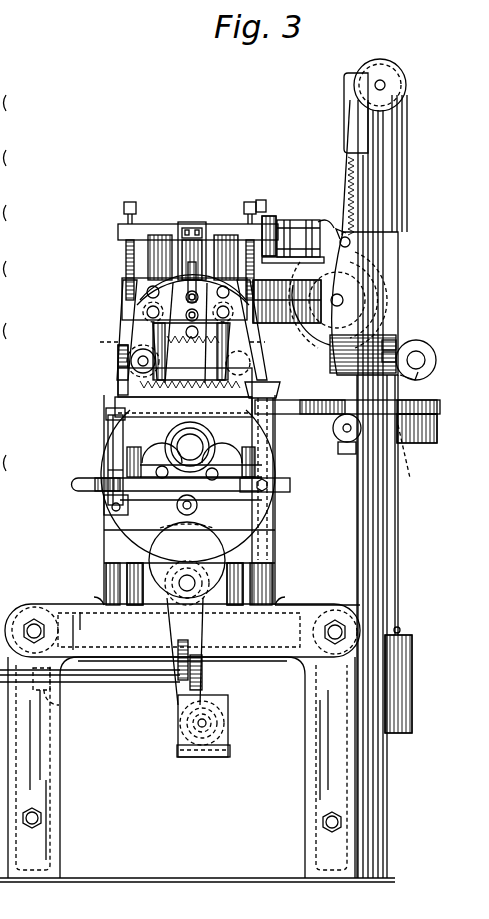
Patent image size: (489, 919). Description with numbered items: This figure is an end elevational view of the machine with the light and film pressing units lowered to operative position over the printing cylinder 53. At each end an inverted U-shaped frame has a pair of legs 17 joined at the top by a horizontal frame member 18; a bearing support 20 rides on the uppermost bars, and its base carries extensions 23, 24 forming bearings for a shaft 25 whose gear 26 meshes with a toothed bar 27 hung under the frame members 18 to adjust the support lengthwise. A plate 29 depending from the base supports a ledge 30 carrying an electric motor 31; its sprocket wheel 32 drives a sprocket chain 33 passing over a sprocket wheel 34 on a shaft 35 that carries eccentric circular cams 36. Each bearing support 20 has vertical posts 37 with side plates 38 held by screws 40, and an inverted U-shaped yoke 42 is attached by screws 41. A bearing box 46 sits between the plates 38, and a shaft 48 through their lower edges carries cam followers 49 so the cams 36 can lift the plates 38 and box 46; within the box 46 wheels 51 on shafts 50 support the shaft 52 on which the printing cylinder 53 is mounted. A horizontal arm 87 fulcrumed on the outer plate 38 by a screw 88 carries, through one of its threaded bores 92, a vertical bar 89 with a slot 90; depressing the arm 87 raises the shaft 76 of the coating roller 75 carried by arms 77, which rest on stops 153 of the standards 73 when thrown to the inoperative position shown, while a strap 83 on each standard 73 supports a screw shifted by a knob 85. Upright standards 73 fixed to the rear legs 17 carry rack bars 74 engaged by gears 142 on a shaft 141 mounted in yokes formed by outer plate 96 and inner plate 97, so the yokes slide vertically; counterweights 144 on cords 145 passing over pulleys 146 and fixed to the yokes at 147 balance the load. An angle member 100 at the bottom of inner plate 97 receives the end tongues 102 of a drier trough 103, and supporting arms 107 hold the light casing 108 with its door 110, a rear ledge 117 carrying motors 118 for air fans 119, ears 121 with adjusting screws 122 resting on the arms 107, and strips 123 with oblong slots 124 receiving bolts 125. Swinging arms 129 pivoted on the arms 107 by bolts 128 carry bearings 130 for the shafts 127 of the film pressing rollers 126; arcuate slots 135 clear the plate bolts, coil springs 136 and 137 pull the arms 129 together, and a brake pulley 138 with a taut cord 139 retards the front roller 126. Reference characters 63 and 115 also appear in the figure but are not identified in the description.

The legs 17 is at (60, 786).
The horizontal frame member 18 is at (268, 636).
The bearing supports 20 is at (275, 570).
The extension 23 is at (62, 708).
The extension 24 is at (194, 652).
The shaft 25 is at (90, 675).
The gear 26 is at (175, 684).
The toothed bar 27 is at (170, 640).
The plate 29 is at (228, 698).
The ledge 30 is at (194, 758).
The electric motor 31 is at (232, 722).
The sprocket wheel 32 is at (180, 728).
The sprocket chain 33 is at (170, 598).
The sprocket wheel 34 is at (179, 630).
The shaft 35 is at (180, 582).
The eccentric circular cam 36 is at (276, 548).
The vertical posts 37 is at (104, 456).
The plates 38 is at (276, 520).
The screws 40 is at (118, 398).
The screws 41 is at (104, 512).
The inverted U-shaped yoke 42 is at (106, 412).
The bearing box 46 is at (154, 449).
The shaft 48 is at (164, 530).
The cam follower 49 is at (187, 560).
The shafts 50 is at (216, 462).
The wheels 51 is at (160, 460).
The shaft 52 is at (192, 440).
The printing cylinder 53 is at (118, 385).
The block 63 is at (98, 365).
The upright standards 73 is at (372, 779).
The rack bars 74 is at (358, 153).
The roller 75 is at (416, 340).
The shaft 76 is at (383, 339).
The arms 77 is at (380, 352).
The strap 83 is at (350, 454).
The knob 85 is at (333, 430).
The horizontal arm 87 is at (82, 491).
The screw 88 is at (180, 503).
The vertical bar 89 is at (270, 390).
The longitudinal slot 90 is at (284, 494).
The threaded bores 92 is at (280, 478).
The outer plate 96 is at (372, 255).
The inner plate 97 is at (352, 402).
The angle member 100 is at (310, 400).
The end tongues 102 is at (417, 379).
The trough-like member 103 is at (412, 443).
The supporting arms 107 is at (309, 313).
The light casing 108 is at (206, 188).
The door 110 is at (150, 200).
The wedge 115 is at (191, 351).
The ledge 117 is at (342, 294).
The motors 118 is at (276, 222).
The air fans 119 is at (288, 224).
The ears 121 is at (118, 229).
The adjusting screws 122 is at (124, 206).
The strip 123 is at (184, 195).
The oblong slot 124 is at (188, 272).
The bolts 125 is at (226, 288).
The rollers 126 is at (180, 339).
The shafts 127 is at (190, 382).
The bolts 128 is at (148, 290).
The swinging arms 129 is at (131, 364).
The bearing 130 is at (150, 308).
The arcuate slots 135 is at (287, 301).
The coil spring 136 is at (183, 403).
The coil spring 137 is at (287, 307).
The pulley 138 is at (122, 330).
The taut cord 139 is at (150, 308).
The shaft 141 is at (372, 272).
The gears 142 is at (380, 290).
The counterweights 144 is at (402, 733).
The cords 145 is at (400, 552).
The pulleys 146 is at (380, 60).
The cord attachment 147 is at (352, 238).
The stops 153 is at (418, 459).